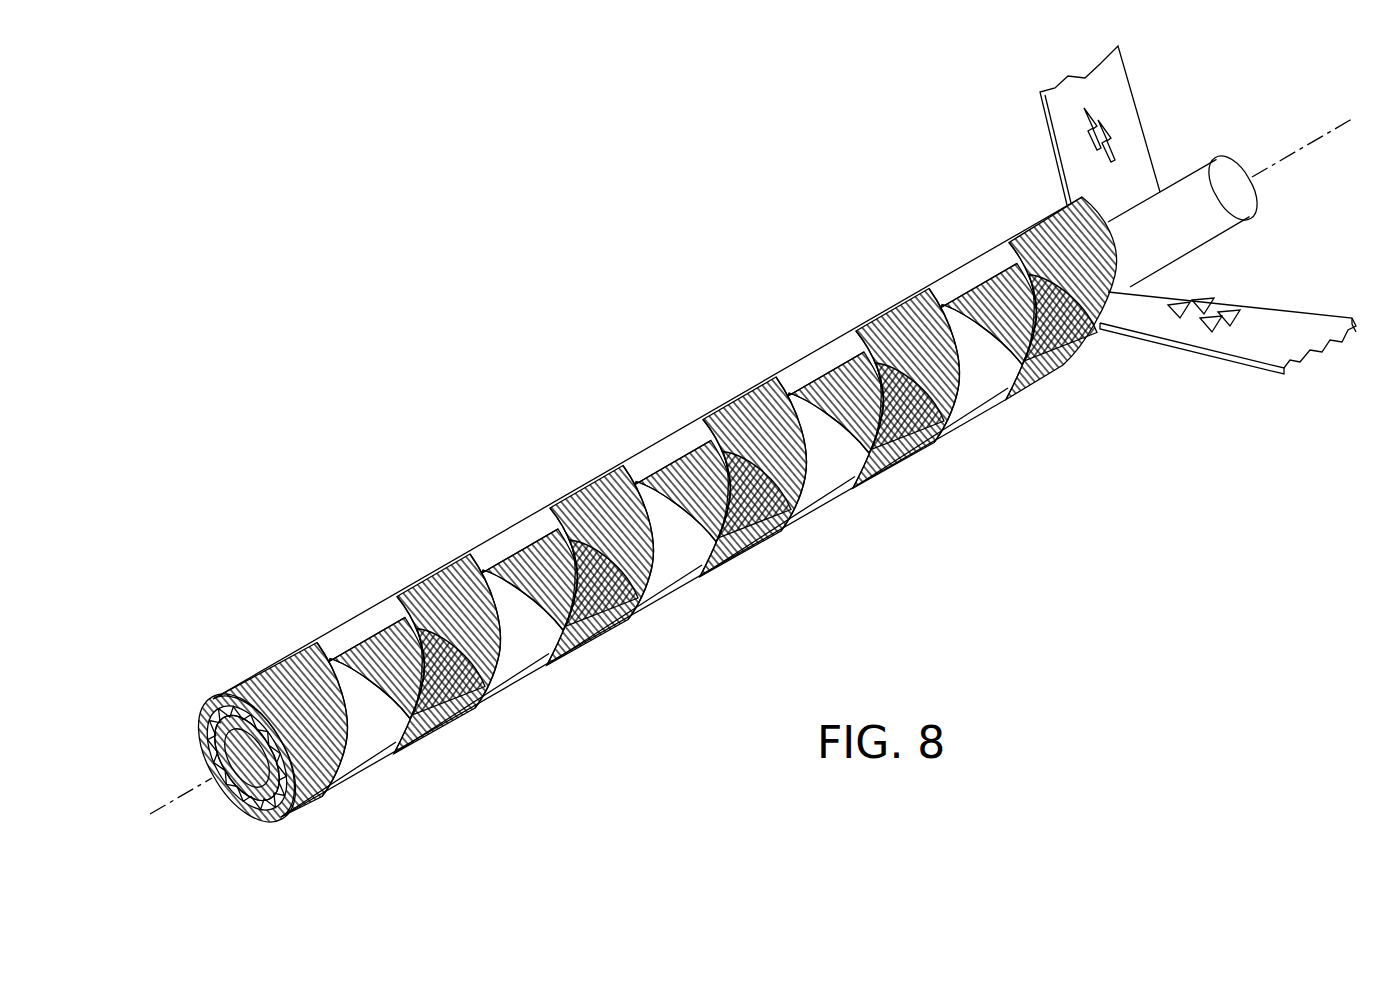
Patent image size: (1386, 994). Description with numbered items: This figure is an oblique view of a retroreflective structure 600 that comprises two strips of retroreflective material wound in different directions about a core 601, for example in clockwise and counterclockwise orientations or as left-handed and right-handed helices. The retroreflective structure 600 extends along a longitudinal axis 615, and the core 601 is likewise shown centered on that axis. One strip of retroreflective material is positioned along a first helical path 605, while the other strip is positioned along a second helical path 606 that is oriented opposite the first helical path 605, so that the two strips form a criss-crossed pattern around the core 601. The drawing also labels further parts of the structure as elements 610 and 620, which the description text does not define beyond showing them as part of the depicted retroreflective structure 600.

The retroreflective structure 600 is at (518, 236).
The core 601 is at (250, 778).
The first helical path 605 is at (600, 637).
The second helical path 606 is at (500, 547).
The plate 610 is at (1043, 221).
The longitudinal axis 615 is at (185, 792).
The plate 620 is at (1042, 128).